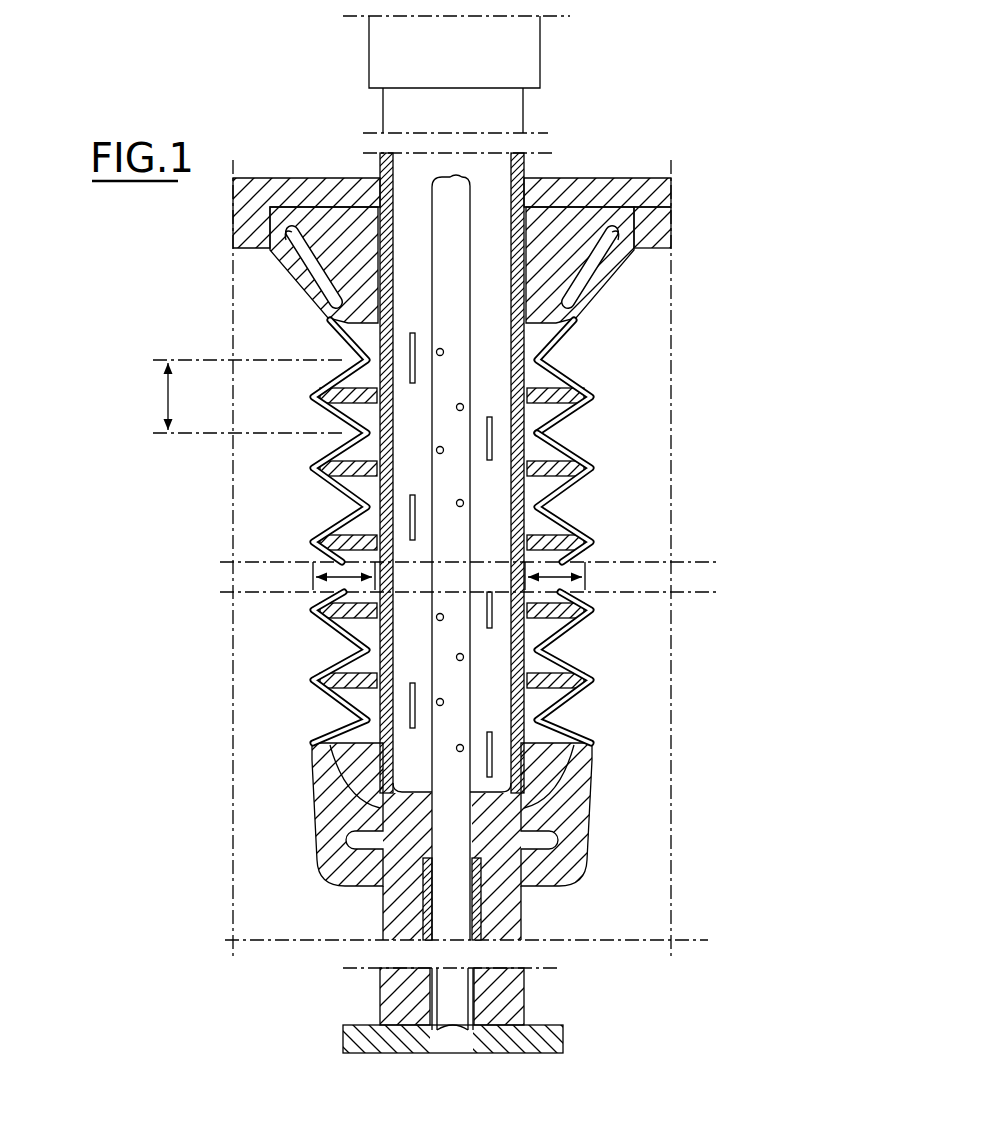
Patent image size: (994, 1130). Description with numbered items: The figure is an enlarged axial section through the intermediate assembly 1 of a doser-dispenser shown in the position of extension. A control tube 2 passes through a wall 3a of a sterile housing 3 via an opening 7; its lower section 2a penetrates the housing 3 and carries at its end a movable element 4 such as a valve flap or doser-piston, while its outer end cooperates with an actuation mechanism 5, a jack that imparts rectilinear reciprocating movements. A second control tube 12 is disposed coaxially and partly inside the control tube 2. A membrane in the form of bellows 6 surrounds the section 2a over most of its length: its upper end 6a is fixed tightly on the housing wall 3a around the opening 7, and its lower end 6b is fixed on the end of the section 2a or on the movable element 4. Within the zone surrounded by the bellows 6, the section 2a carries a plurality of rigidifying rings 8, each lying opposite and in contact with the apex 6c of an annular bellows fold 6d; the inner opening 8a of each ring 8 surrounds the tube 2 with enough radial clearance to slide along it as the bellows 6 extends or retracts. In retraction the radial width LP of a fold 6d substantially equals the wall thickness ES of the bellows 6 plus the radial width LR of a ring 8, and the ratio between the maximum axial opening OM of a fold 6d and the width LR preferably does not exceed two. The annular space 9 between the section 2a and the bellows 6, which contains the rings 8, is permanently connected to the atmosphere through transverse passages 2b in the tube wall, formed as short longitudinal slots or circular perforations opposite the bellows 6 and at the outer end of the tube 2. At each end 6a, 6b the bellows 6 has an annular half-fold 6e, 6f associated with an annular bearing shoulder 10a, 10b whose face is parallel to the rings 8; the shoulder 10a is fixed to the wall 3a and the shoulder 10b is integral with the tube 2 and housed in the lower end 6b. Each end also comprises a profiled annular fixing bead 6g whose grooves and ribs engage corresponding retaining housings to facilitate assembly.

The intermediate assembly 1 is at (562, 900).
The control tube 2 is at (385, 116).
The lower section of the control tube 2a is at (378, 704).
The transverse passages 2b is at (411, 492).
The sterile housing 3 is at (651, 706).
The housing wall 3a is at (653, 233).
The movable element 4 is at (395, 1045).
The actuation mechanism 5 is at (540, 52).
The bellows 6 is at (485, 556).
The upper end of the bellows 6a is at (597, 285).
The lower end of the bellows 6b is at (332, 827).
The apex of the bellows fold 6c is at (312, 680).
The annular bellows fold 6d is at (578, 488).
The upper annular half-fold 6e is at (565, 347).
The lower annular half-fold 6f is at (567, 721).
The profiled annular fixing bead 6g is at (283, 222).
The opening 7 is at (530, 242).
The rigidifying ring 8 is at (330, 413).
The inner opening of the ring 8a is at (330, 489).
The annular space 9 is at (538, 379).
The upper bearing shoulder 10a is at (350, 302).
The lower bearing shoulder 10b is at (553, 762).
The second control tube 12 is at (460, 712).
The thickness of the bellows wall ES is at (558, 519).
The radial width of a bellows fold LP is at (317, 578).
The radial width of a rigidifying ring LR is at (575, 579).
The maximum axial opening of a bellows fold OM is at (140, 396).